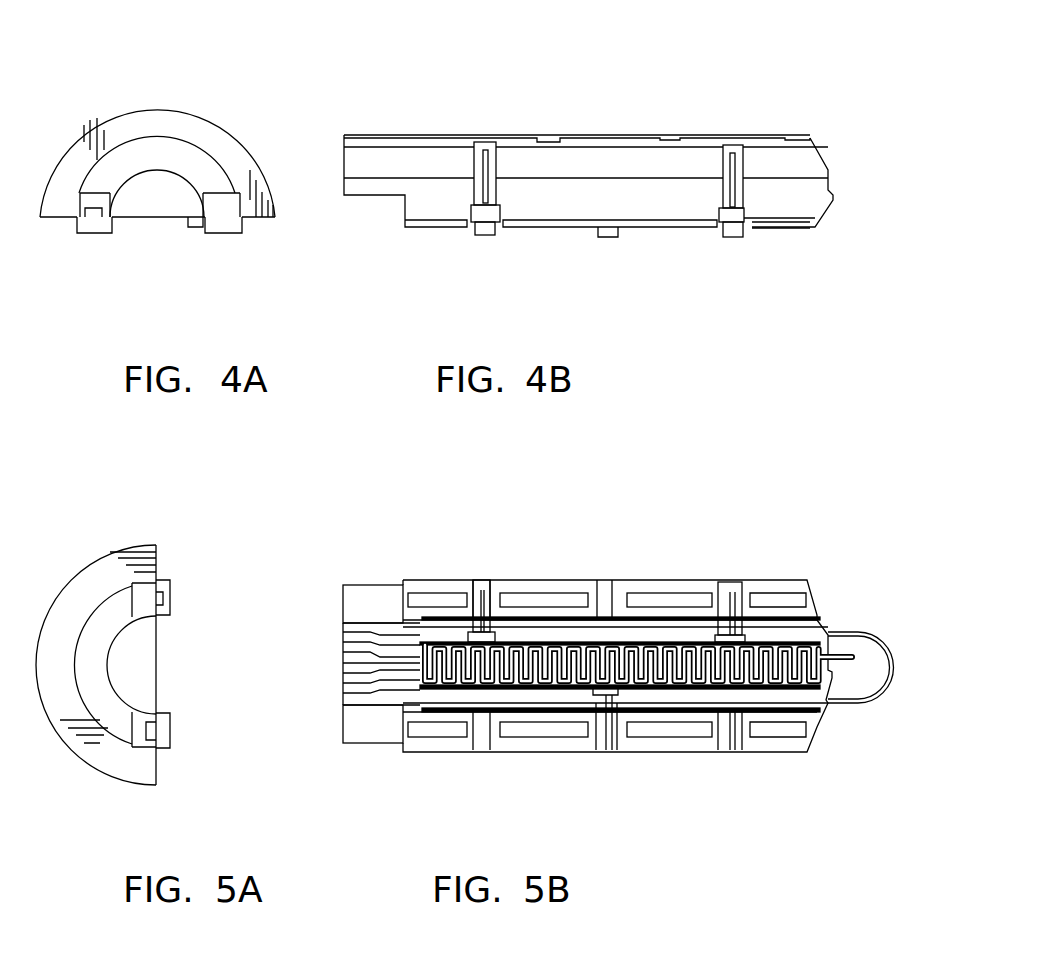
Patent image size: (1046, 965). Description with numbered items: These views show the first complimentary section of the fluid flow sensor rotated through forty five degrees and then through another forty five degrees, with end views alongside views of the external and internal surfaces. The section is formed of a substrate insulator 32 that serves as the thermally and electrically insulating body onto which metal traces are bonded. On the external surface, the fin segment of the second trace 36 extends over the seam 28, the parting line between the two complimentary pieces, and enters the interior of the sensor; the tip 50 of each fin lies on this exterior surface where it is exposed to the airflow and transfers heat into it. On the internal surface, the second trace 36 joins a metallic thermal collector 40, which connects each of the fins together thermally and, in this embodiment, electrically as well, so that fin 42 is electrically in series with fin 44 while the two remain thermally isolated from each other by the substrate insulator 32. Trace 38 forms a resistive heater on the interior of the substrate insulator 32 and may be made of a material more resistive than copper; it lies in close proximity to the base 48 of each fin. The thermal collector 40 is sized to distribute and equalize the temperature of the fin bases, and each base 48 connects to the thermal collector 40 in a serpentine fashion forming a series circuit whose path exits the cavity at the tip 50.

In FIG. 4B, the seam 28 is at (772, 223).
In FIG. 4B, the substrate insulator 32 is at (398, 167).
In FIG. 5B, the substrate insulator 32 is at (365, 600).
In FIG. 4A, the second trace 36 is at (210, 153).
In FIG. 5B, the trace forming resistive heater 38 is at (418, 661).
In FIG. 5B, the thermal collector 40 is at (608, 620).
In FIG. 4B, the fin 42 is at (496, 165).
In FIG. 5B, the fin 42 is at (485, 576).
In FIG. 4B, the fin 44 is at (743, 178).
In FIG. 5B, the fin 44 is at (733, 575).
In FIG. 5B, the base 48 is at (490, 640).
In FIG. 4B, the tip 50 is at (483, 142).